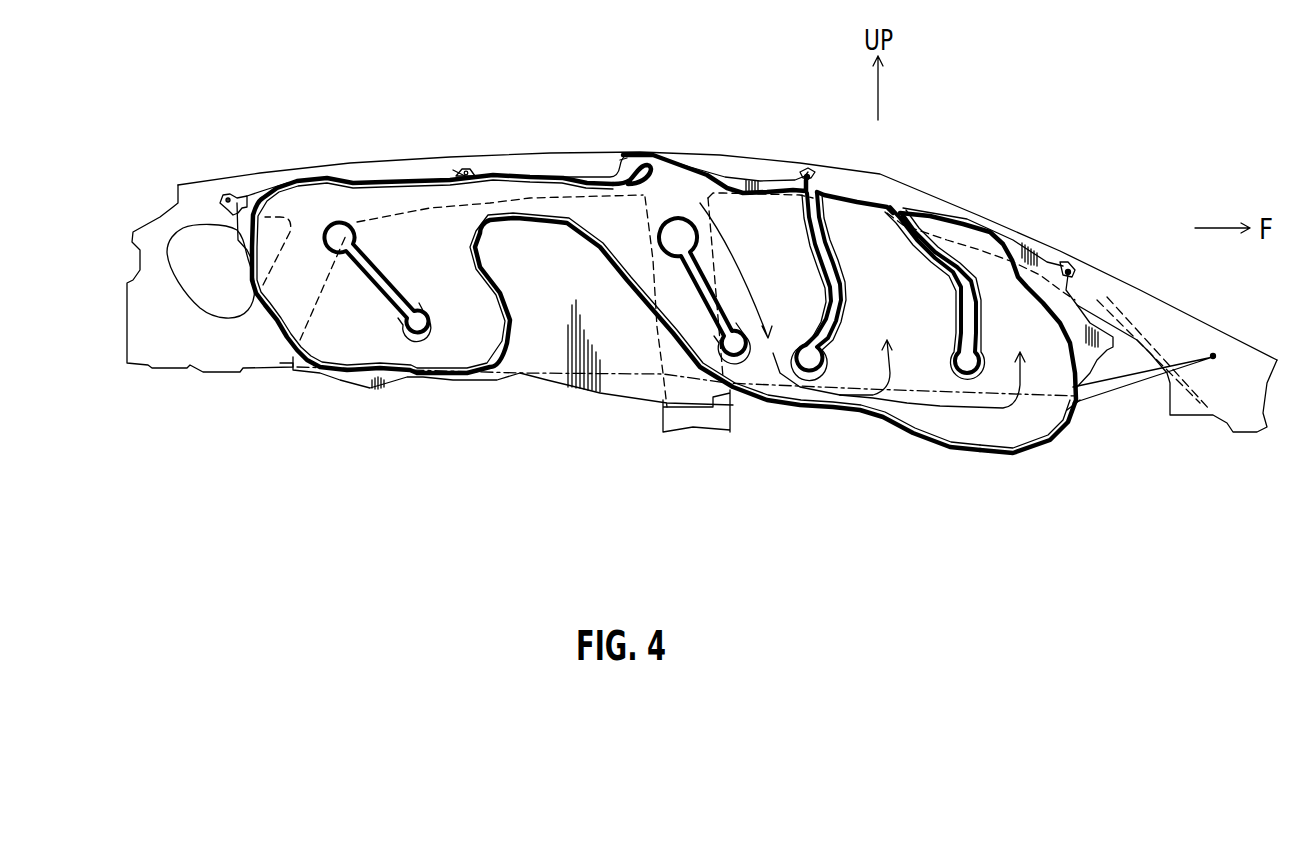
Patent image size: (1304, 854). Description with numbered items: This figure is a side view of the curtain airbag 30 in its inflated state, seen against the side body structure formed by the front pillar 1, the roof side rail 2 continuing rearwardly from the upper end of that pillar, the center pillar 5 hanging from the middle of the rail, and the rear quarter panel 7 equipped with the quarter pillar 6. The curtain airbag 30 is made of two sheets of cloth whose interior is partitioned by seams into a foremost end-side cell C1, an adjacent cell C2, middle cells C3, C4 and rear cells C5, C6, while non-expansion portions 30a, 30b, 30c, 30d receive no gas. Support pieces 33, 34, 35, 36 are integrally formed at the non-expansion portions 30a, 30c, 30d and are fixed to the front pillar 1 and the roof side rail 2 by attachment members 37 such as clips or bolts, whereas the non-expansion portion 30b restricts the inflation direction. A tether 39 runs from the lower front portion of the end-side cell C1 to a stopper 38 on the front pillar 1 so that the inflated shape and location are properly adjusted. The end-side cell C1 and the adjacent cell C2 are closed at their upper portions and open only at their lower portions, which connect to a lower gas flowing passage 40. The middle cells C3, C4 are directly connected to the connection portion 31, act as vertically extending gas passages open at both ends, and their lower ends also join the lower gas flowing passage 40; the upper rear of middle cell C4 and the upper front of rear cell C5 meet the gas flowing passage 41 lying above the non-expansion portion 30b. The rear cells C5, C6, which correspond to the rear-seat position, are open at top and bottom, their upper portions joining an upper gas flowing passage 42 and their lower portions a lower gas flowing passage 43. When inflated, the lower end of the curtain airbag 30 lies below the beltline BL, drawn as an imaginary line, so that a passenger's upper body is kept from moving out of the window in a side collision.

The front pillar 1 is at (1090, 262).
The roof side rail 2 is at (720, 140).
The center pillar 5 is at (663, 423).
The quarter pillar 6 is at (313, 308).
The rear quarter panel 7 is at (217, 363).
The curtain airbag 30 is at (425, 166).
The non-expansion portion 30a is at (1060, 310).
The non-expansion portion 30b is at (520, 357).
The non-expansion portion 30c is at (268, 307).
The non-expansion portion 30d is at (577, 177).
The connection portion 31 is at (627, 160).
The support piece 33 is at (1067, 270).
The support piece 34 is at (803, 170).
The support piece 35 is at (493, 175).
The support piece 36 is at (237, 197).
The attachment member 37 is at (227, 203).
The stopper 38 is at (1213, 357).
The tether 39 is at (1160, 397).
The lower gas flowing passage 40 is at (908, 412).
The gas flowing passage 41 is at (530, 203).
The upper gas flowing passage 42 is at (320, 188).
The lower gas flowing passage 43 is at (397, 348).
The beltline BL is at (965, 392).
The end-side cell C1 is at (1012, 332).
The adjacent cell C2 is at (896, 319).
The middle cell C3 is at (796, 282).
The middle cell C4 is at (687, 317).
The rear cell C5 is at (448, 284).
The rear cell C6 is at (313, 284).